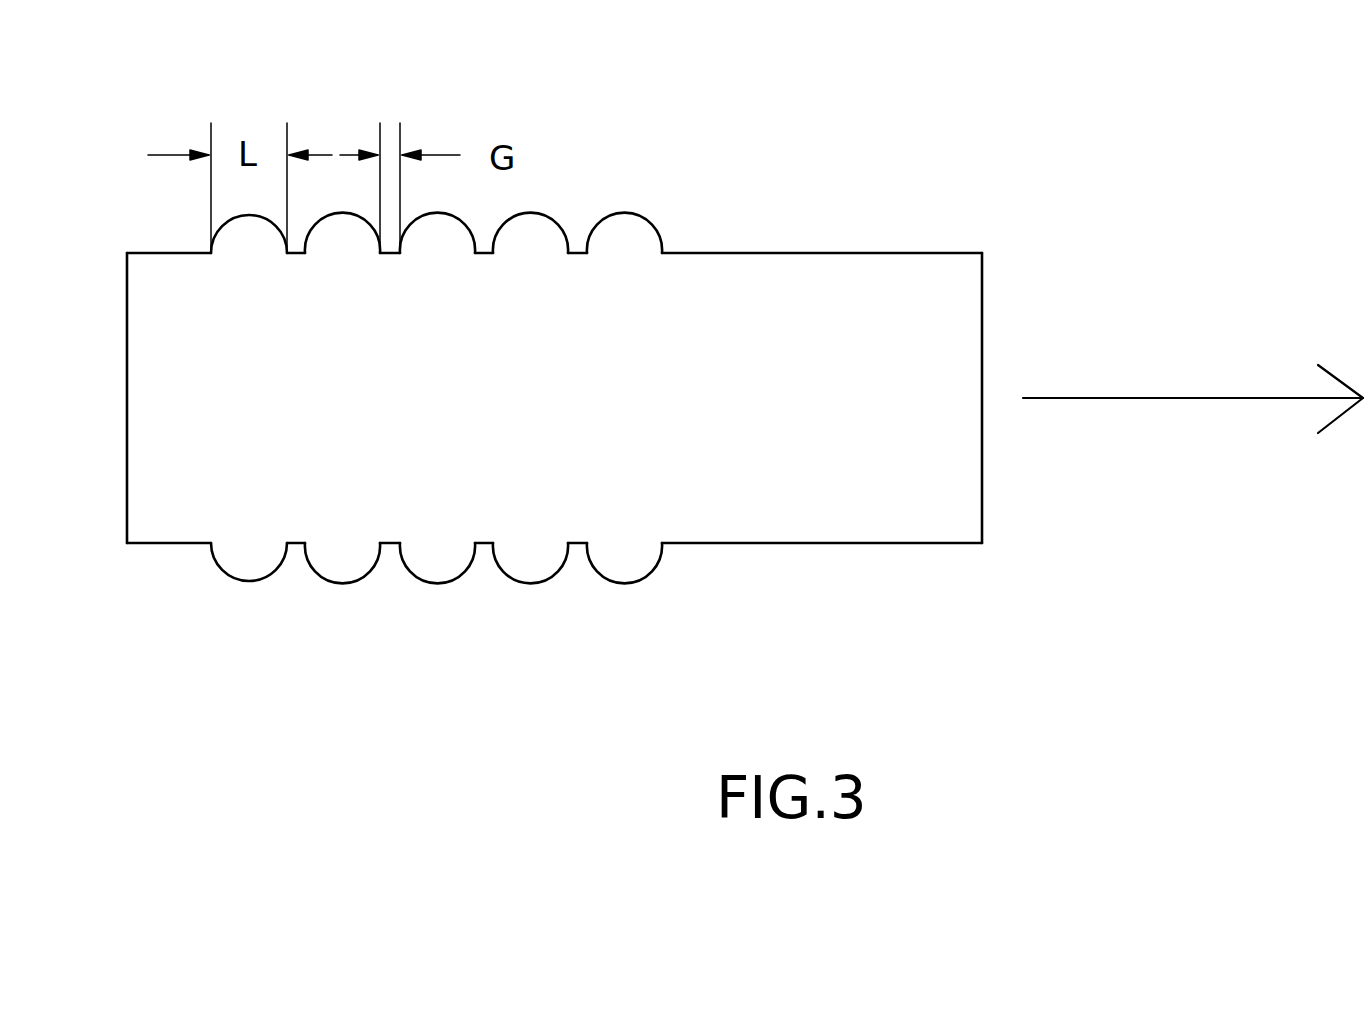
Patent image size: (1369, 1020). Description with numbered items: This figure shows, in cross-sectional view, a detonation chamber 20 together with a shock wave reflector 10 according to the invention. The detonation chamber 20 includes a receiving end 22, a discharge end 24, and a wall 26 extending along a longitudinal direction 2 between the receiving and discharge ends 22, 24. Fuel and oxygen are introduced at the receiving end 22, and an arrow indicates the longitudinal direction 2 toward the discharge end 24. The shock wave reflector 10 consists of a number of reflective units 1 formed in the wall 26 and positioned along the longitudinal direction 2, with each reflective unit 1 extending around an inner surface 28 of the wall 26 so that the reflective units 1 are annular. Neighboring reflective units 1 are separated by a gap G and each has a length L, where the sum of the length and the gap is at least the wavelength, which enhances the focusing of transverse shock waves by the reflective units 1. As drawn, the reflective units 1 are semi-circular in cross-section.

The reflective unit 1 is at (243, 563).
The longitudinal direction 2 is at (1193, 400).
The shock wave reflector 10 is at (535, 190).
The detonation chamber 20 is at (1214, 730).
The receiving end 22 is at (127, 503).
The discharge end 24 is at (983, 505).
The wall 26 is at (813, 543).
The inner surface 28 is at (905, 254).